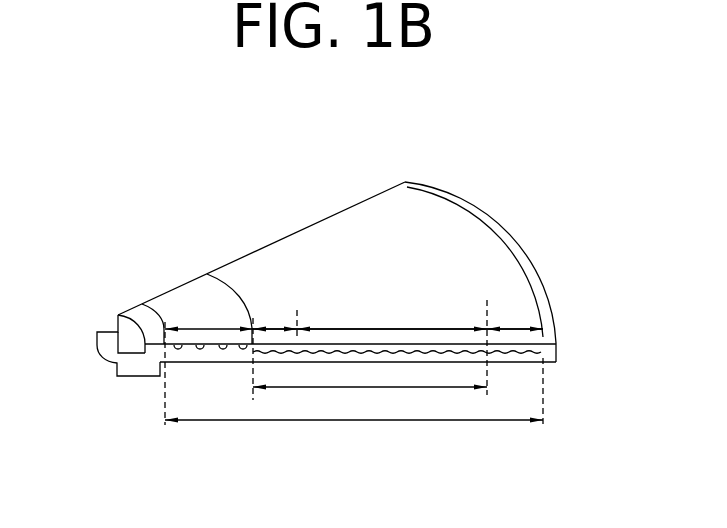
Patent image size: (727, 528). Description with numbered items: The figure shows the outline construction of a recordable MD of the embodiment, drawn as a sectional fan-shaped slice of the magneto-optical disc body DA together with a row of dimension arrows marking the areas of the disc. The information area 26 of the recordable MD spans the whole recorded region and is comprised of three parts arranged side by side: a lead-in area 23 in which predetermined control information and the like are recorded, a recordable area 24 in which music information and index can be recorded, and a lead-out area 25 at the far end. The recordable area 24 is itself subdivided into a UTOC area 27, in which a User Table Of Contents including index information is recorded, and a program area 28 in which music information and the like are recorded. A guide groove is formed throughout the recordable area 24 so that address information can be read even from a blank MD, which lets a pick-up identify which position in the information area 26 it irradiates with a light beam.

The lead-in area 23 is at (200, 327).
The recordable area 24 is at (392, 388).
The lead-out area 25 is at (512, 327).
The information area 26 is at (302, 422).
The UTOC area 27 is at (275, 327).
The program area 28 is at (387, 327).
The magneto-optical disc body DA is at (343, 227).